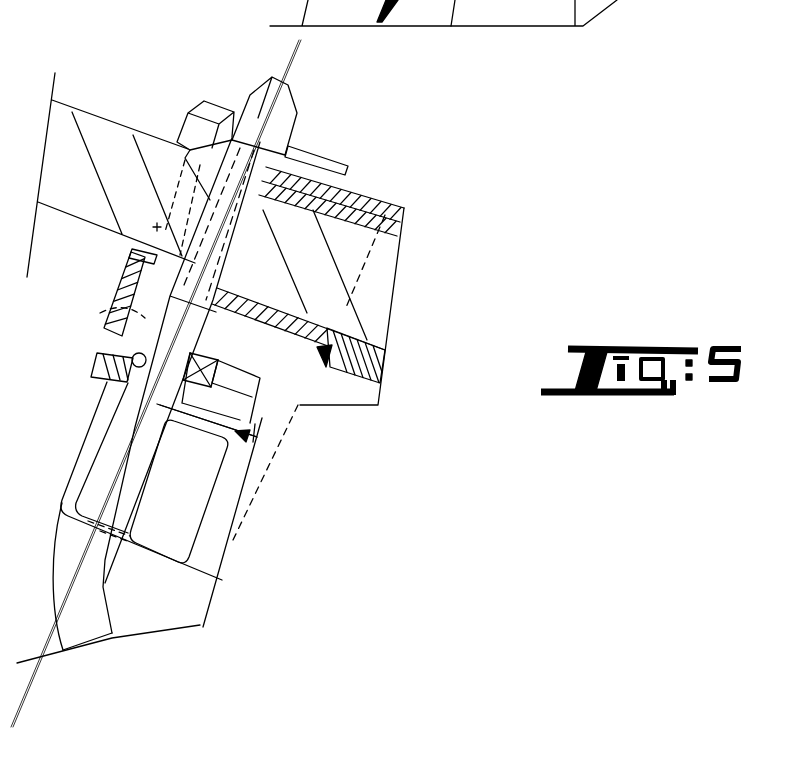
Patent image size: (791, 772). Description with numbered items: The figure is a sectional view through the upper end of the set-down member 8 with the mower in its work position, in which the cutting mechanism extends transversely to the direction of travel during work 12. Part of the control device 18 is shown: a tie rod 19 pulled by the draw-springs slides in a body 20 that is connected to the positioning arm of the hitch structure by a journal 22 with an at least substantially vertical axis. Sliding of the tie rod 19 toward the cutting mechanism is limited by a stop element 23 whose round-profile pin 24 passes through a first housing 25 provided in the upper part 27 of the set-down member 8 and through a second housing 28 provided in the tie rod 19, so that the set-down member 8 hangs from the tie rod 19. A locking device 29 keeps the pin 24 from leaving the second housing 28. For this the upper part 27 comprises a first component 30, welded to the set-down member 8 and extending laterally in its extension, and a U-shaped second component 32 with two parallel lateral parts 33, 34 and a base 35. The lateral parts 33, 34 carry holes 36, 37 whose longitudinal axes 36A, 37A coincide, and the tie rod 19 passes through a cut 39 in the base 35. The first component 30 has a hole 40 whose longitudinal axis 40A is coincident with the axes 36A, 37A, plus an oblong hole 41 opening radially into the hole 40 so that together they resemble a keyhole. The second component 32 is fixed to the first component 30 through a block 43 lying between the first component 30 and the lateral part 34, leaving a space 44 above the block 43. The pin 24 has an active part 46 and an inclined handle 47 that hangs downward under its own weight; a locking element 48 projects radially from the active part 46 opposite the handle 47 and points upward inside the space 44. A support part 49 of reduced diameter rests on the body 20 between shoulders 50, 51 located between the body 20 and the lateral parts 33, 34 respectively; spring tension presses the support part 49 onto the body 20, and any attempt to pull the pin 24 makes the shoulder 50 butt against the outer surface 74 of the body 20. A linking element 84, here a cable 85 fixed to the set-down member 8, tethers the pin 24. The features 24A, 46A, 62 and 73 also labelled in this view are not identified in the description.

The set-down member 8 is at (227, 538).
The direction of travel during work 12 is at (430, 472).
The control device 18 is at (440, 323).
The tie rod 19 is at (70, 113).
The body 20 is at (407, 227).
The journal 22 is at (633, 0).
The stop element 23 is at (118, 591).
The pin 24 is at (90, 640).
The base plate edge 24A is at (27, 700).
The first housing 25 is at (303, 137).
The upper part 27 is at (275, 523).
The second housing 28 is at (247, 238).
The locking device 29 is at (408, 389).
The first component 30 is at (105, 381).
The second component 32 is at (200, 110).
The lateral part 33 is at (346, 171).
The lateral part 34 is at (196, 378).
The base 35 is at (137, 308).
The hole 36 is at (262, 87).
The longitudinal axis 36A is at (295, 80).
The hole 37 is at (100, 313).
The longitudinal axis 37A is at (297, 85).
The cut 39 is at (157, 226).
The hole 40 is at (103, 422).
The longitudinal axis 40A is at (293, 78).
The oblong hole 41 is at (157, 440).
The block 43 is at (262, 380).
The space 44 is at (225, 367).
The active part 46 is at (262, 210).
The rod 46A is at (20, 713).
The handle 47 is at (110, 635).
The locking element 48 is at (133, 353).
The support part 49 is at (233, 258).
The shoulder 50 is at (197, 153).
The shoulder 51 is at (130, 254).
The surface 62 is at (396, 429).
The direction arrow 73 is at (97, 108).
The outer surface 74 is at (390, 195).
The linking element 84 is at (436, 13).
The cable 85 is at (390, 13).